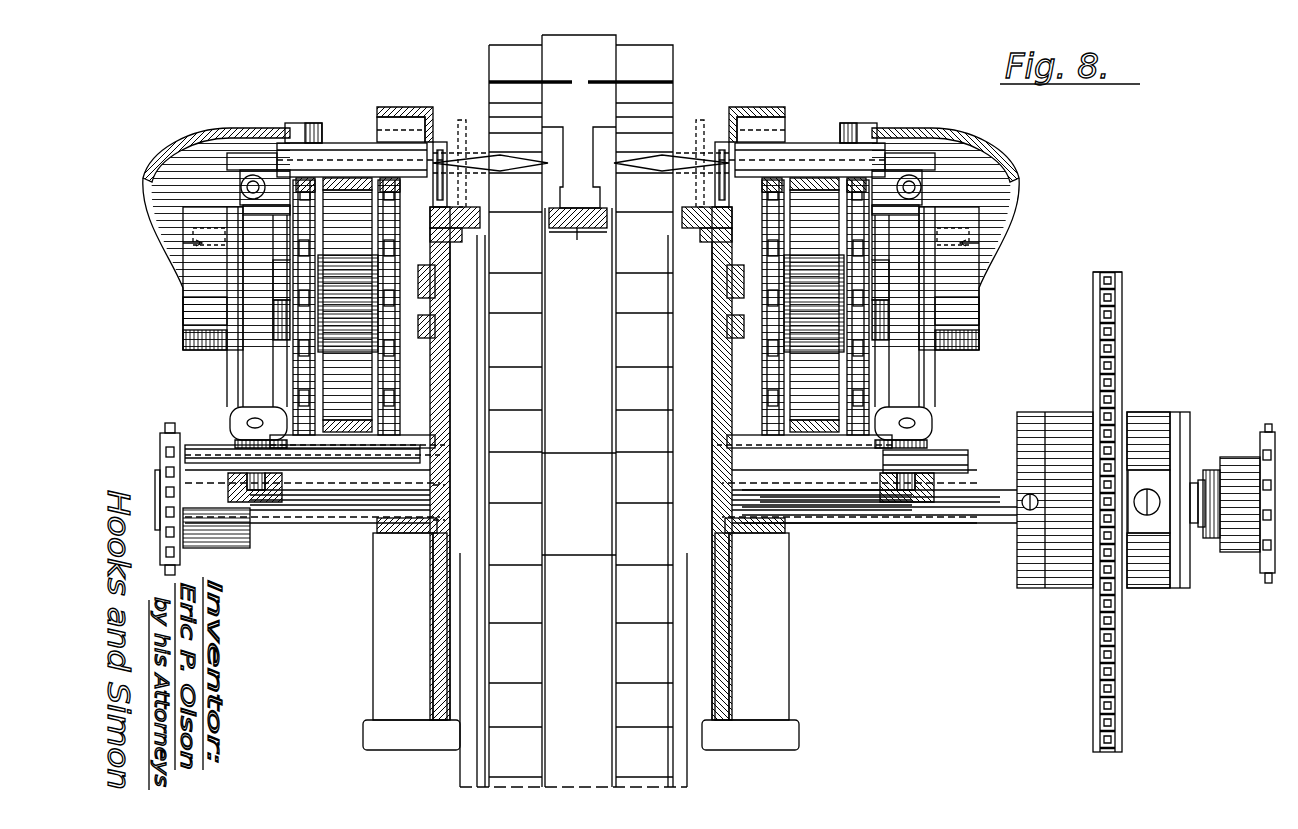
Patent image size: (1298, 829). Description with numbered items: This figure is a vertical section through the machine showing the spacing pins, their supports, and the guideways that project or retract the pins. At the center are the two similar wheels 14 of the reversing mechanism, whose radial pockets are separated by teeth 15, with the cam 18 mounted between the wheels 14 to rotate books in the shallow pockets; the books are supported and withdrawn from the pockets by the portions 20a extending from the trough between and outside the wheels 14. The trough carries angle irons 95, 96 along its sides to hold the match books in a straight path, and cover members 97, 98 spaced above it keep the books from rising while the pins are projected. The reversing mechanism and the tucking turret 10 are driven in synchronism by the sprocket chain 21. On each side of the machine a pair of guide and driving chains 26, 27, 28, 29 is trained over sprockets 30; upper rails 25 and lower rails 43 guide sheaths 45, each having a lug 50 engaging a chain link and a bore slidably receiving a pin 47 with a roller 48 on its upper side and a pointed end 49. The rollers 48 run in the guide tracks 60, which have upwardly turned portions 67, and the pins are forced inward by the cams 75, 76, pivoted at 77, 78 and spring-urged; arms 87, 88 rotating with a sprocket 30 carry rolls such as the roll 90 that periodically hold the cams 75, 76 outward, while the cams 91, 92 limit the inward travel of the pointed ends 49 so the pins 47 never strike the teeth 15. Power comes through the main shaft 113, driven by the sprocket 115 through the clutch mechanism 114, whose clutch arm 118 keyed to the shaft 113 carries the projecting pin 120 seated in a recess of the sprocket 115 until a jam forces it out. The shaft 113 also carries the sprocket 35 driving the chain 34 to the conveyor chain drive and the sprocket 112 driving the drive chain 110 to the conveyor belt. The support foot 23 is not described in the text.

The turret 10 is at (489, 47).
The wheels of the reversing mechanism 14 is at (581, 440).
The teeth 15 is at (560, 497).
The cam 18 is at (574, 195).
The portions of the trough 20a is at (600, 232).
The sprocket chain 21 is at (1125, 327).
The support foot 23 is at (373, 634).
The upper rails 25 is at (348, 178).
The guide and driving chain 26 is at (303, 178).
The guide and driving chain 27 is at (390, 178).
The guide and driving chain 28 is at (855, 178).
The guide and driving chain 29 is at (773, 178).
The sprocket 30 is at (388, 280).
The chain 34 is at (183, 566).
The sprocket 35 is at (160, 440).
The lower rails 43 is at (350, 432).
The sheath 45 is at (365, 143).
The pin 47 is at (255, 153).
The roller 48 is at (302, 123).
The pointed end 49 is at (455, 172).
The lug 50 is at (435, 190).
The guide track 60 is at (405, 107).
The upwardly turned portions 67 is at (240, 290).
The cam 75 is at (172, 132).
The cam 76 is at (1020, 186).
The pivot 77 is at (183, 245).
The pivot 78 is at (980, 258).
The arm 87 is at (245, 413).
The arm 88 is at (243, 220).
The roll 90 is at (245, 187).
The cam 91 is at (440, 143).
The cam 92 is at (712, 145).
The angle iron 95 is at (690, 235).
The angle iron 96 is at (470, 235).
The cover member 97 is at (668, 92).
The cover member 98 is at (495, 90).
The drive chain 110 is at (1268, 583).
The sprocket 112 is at (1236, 457).
The main shaft 113 is at (345, 512).
The clutch mechanism 114 is at (1150, 588).
The sprocket 115 is at (1112, 272).
The clutch arm 118 is at (1142, 588).
The pin 120 is at (1210, 538).